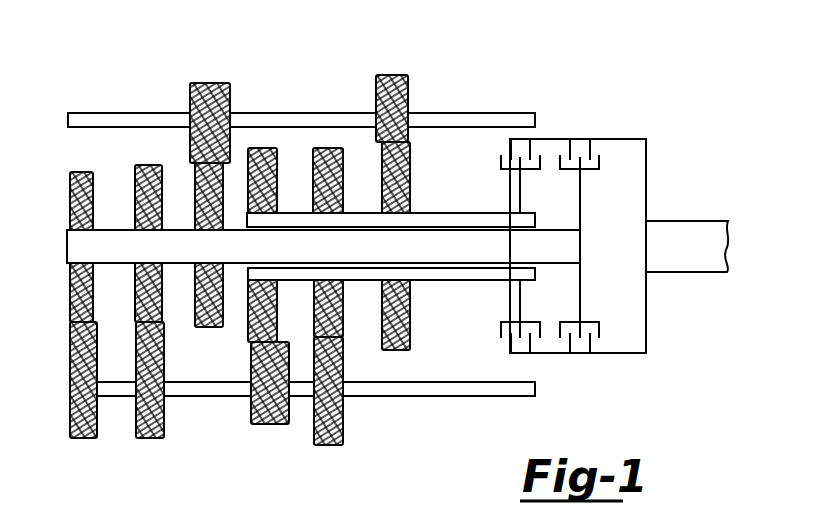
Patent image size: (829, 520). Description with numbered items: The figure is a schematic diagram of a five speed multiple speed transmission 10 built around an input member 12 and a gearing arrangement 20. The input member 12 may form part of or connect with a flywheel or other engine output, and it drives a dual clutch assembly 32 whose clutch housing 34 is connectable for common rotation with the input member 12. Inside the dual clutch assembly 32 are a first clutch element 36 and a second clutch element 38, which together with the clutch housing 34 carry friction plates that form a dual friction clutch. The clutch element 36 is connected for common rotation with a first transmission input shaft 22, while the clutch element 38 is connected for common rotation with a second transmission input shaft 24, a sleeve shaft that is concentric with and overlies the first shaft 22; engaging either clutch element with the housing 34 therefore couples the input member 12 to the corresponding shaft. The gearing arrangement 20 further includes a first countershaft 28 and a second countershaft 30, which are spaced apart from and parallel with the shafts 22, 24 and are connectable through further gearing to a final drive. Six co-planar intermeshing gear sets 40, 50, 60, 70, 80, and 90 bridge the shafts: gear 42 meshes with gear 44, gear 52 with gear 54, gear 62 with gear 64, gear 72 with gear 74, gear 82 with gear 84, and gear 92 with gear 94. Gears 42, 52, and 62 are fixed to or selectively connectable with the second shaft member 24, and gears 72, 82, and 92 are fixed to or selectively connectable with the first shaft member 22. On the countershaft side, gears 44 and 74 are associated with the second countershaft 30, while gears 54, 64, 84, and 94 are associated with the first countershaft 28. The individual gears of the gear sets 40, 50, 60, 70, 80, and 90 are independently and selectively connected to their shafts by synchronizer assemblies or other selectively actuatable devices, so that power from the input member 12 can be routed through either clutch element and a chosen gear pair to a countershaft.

The multiple speed transmission 10 is at (613, 85).
The input member 12 is at (692, 222).
The gearing arrangement 20 is at (105, 80).
The first transmission input shaft 22 is at (552, 228).
The second transmission input shaft 24 is at (475, 215).
The first countershaft 28 is at (505, 398).
The second countershaft 30 is at (489, 112).
The dual clutch assembly 32 is at (655, 125).
The clutch housing 34 is at (646, 328).
The first clutch element 36 is at (580, 282).
The second clutch element 38 is at (520, 297).
The co-planar gear set 40 is at (465, 398).
The gear 42 is at (410, 178).
The gear 44 is at (402, 93).
The co-planar gear set 50 is at (361, 318).
The gear 52 is at (340, 317).
The gear 54 is at (343, 405).
The co-planar gear set 60 is at (260, 284).
The gear 62 is at (278, 159).
The gear 64 is at (250, 365).
The co-planar gear set 70 is at (212, 252).
The gear 72 is at (195, 181).
The gear 74 is at (215, 85).
The co-planar gear set 80 is at (147, 316).
The gear 82 is at (134, 188).
The gear 84 is at (160, 360).
The co-planar gear set 90 is at (58, 343).
The gear 92 is at (70, 198).
The gear 94 is at (72, 347).